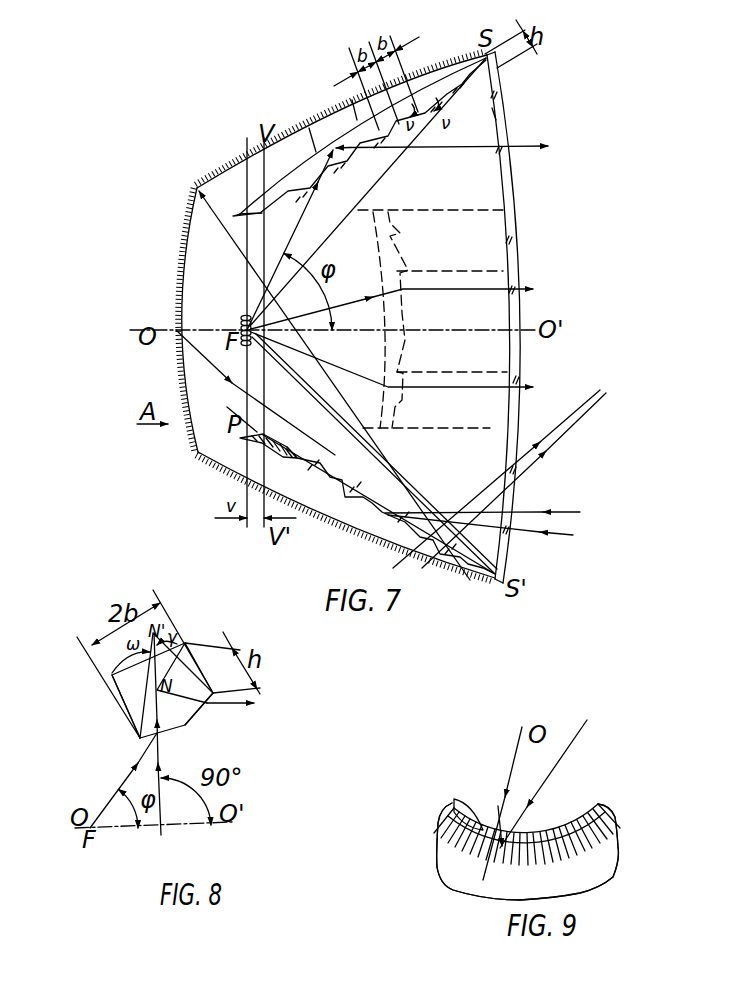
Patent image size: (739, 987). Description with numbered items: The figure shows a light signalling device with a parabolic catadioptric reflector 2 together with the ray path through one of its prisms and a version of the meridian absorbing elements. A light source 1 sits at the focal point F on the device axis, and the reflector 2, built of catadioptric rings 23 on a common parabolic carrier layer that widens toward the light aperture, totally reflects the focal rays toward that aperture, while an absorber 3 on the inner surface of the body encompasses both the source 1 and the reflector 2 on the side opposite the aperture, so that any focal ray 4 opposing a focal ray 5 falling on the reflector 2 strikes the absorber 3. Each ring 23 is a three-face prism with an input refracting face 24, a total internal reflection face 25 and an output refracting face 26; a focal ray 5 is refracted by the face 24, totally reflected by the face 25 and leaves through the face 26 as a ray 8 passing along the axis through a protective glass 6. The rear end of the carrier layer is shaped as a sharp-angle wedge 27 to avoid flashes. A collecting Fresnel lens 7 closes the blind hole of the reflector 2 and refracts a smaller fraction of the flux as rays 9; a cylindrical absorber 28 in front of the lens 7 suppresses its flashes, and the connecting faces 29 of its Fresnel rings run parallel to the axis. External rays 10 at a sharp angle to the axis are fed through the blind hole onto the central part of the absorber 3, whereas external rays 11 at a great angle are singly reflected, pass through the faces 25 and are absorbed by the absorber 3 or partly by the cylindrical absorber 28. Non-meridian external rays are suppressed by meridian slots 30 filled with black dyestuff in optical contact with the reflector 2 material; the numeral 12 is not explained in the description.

In FIG. 7, the light source 1 is at (238, 318).
In FIG. 7, the catadioptric reflector 2 is at (291, 182).
In FIG. 9, the catadioptric reflector 2 is at (593, 877).
In FIG. 7, the absorber 3 is at (186, 212).
In FIG. 7, the focal ray 4 is at (205, 396).
In FIG. 9, the focal ray 4 is at (496, 813).
In FIG. 7, the focal ray 5 is at (290, 240).
In FIG. 8, the focal ray 5 is at (123, 780).
In FIG. 7, the protective glass 6 is at (497, 90).
In FIG. 7, the collecting lens 7 is at (397, 314).
In FIG. 7, the output rays 8 is at (452, 140).
In FIG. 8, the output rays 8 is at (239, 707).
In FIG. 7, the rays of the source refracted by the lens 9 is at (404, 337).
In FIG. 7, the rays of external illumination 10 is at (352, 103).
In FIG. 7, the rays of external illumination 11 is at (513, 469).
In FIG. 9, the rays of external illumination 11 is at (548, 775).
In FIG. 7, the side wall 12 is at (503, 118).
In FIG. 7, the catadioptric ring 23 is at (314, 150).
In FIG. 8, the input refracting face 24 is at (142, 740).
In FIG. 8, the total internal reflection face 25 is at (126, 706).
In FIG. 9, the total internal reflection face 25 is at (528, 851).
In FIG. 8, the output refracting face 26 is at (199, 710).
In FIG. 7, the sharp-angle wedge 27 is at (262, 214).
In FIG. 9, the sharp-angle wedge 27 is at (562, 822).
In FIG. 7, the cylindrical absorber 28 is at (466, 228).
In FIG. 7, the connecting faces 29 is at (398, 373).
In FIG. 7, the meridian slots 30 is at (270, 449).
In FIG. 9, the meridian slots 30 is at (465, 800).